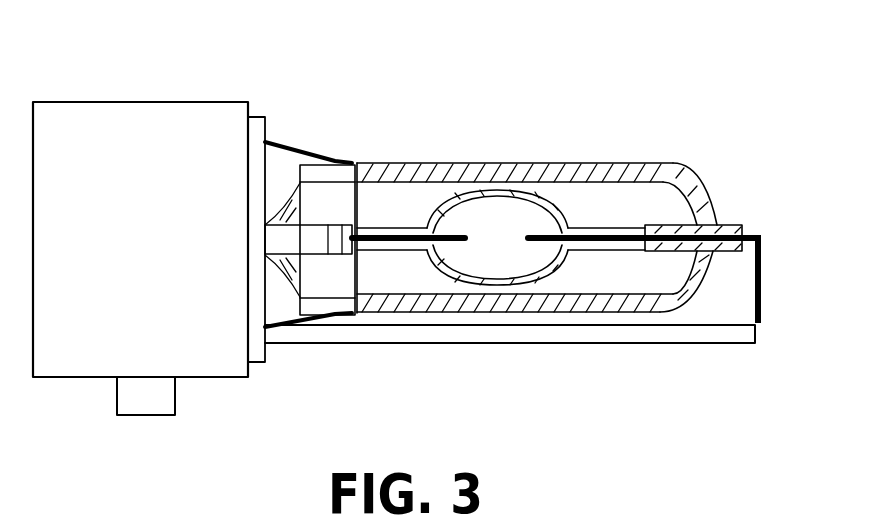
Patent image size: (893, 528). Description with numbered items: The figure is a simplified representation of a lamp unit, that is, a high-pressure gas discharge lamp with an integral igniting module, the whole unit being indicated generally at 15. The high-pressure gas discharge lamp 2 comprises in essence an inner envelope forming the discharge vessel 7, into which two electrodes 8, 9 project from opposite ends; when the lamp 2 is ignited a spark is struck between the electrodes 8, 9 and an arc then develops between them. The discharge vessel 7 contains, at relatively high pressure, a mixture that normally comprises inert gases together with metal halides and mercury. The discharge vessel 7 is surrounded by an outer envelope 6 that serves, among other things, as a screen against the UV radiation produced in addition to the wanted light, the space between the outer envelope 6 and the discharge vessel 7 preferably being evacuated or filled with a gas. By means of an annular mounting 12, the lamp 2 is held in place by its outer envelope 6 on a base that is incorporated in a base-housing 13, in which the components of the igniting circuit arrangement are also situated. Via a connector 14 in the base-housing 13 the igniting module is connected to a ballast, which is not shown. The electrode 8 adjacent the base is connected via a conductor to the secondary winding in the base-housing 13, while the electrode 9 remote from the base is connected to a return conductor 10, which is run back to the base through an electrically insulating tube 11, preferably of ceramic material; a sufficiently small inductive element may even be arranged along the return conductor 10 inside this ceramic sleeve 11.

The high-pressure gas discharge lamp 2 is at (648, 161).
The outer envelope 6 is at (387, 172).
The discharge vessel 7 is at (496, 194).
The electrode 8 is at (466, 236).
The electrode 9 is at (529, 242).
The return conductor 10 is at (763, 293).
The electrically insulating tube 11 is at (690, 333).
The annular mounting 12 is at (325, 300).
The base-housing 13 is at (60, 368).
The connector 14 is at (145, 402).
The lamp assembly 15 is at (693, 80).